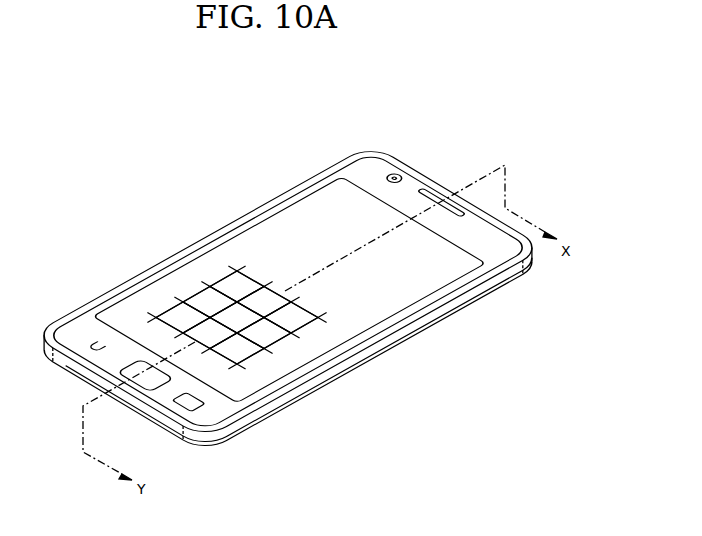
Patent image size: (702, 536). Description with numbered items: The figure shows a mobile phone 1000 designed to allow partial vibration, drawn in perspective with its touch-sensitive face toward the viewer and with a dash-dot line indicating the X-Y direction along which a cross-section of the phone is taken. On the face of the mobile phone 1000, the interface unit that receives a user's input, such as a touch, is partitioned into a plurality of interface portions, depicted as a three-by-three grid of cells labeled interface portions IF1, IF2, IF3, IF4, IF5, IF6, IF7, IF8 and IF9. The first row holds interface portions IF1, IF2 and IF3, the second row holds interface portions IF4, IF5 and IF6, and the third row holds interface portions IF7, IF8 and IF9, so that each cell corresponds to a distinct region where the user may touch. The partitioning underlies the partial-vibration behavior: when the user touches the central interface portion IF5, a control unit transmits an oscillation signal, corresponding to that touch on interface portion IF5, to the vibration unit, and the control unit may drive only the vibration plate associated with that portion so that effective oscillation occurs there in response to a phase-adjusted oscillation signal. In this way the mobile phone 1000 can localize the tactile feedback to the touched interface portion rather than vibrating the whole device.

The mobile phone 1000 is at (308, 143).
The interface portion IF1 is at (237, 286).
The interface portion IF2 is at (264, 302).
The interface portion IF3 is at (291, 317).
The interface portion IF4 is at (210, 302).
The interface portion IF5 is at (237, 317).
The interface portion IF6 is at (264, 333).
The interface portion IF7 is at (183, 317).
The interface portion IF8 is at (210, 333).
The interface portion IF9 is at (237, 348).